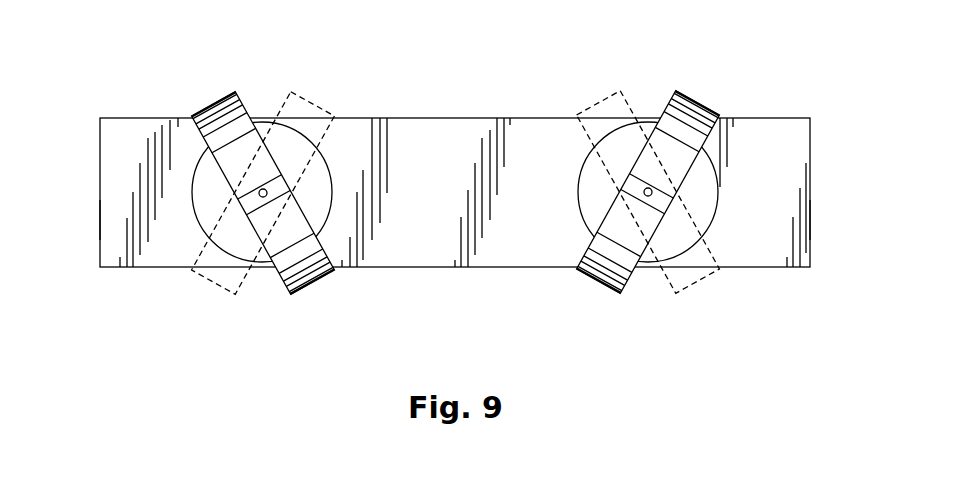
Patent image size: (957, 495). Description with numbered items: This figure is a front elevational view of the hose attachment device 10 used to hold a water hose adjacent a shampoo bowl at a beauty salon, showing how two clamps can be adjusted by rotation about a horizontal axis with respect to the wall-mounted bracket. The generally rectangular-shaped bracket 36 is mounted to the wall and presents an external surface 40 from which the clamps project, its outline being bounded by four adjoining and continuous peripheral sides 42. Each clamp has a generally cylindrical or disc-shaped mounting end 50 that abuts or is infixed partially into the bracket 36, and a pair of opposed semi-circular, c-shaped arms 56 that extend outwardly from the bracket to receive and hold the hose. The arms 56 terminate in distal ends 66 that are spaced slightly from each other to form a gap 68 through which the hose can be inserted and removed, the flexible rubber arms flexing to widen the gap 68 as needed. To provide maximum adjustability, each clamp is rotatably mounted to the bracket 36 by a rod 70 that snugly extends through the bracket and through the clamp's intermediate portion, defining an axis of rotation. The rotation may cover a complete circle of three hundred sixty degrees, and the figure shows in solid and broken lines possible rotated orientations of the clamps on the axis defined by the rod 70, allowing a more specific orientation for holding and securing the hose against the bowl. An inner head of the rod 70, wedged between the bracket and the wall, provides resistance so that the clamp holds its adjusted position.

The hose attachment device 10 is at (458, 181).
The bracket 36 is at (100, 118).
The external surface 40 is at (115, 232).
The peripheral sides 42 is at (812, 226).
The mounting end 50 is at (195, 172).
The arms 56 is at (205, 280).
The distal end 66 is at (288, 187).
The gap 68 is at (670, 198).
The rod 70 is at (258, 194).